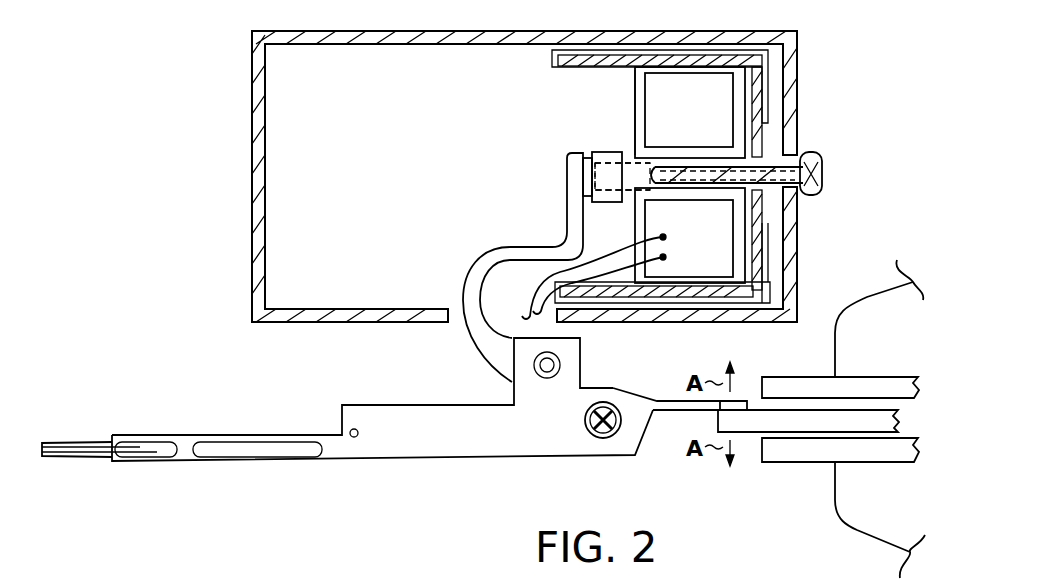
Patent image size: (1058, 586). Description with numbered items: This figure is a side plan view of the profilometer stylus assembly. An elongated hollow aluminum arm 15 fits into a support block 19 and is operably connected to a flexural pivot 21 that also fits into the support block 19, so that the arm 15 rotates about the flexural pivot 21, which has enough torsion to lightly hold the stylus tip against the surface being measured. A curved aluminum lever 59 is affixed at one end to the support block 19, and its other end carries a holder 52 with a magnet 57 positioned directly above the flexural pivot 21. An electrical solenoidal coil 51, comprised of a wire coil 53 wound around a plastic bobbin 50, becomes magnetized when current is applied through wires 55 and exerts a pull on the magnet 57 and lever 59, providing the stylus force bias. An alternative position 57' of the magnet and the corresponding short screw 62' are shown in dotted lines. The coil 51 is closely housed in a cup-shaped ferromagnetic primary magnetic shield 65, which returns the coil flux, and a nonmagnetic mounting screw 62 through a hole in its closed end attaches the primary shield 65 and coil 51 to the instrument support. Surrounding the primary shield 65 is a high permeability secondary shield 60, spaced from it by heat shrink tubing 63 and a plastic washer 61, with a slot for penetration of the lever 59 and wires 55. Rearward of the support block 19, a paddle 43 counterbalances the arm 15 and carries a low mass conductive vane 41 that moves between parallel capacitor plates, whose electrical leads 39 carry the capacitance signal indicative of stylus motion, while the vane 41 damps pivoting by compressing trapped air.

The secondary shield 60 is at (253, 33).
The heat shrink tubing 63 is at (552, 53).
The primary magnetic shield 65 is at (569, 68).
The plastic bobbin 50 is at (635, 83).
The wire coil 53 is at (701, 121).
The electrical solenoidal coil 51 is at (634, 115).
The plastic washer 61 is at (756, 98).
The mounting screw 62 is at (737, 175).
The short screw 62' is at (838, 188).
The alternative position of the magnet 57' is at (589, 158).
The magnet 57 is at (607, 198).
The holder 52 is at (567, 175).
The lever 59 is at (510, 252).
The wires 55 is at (668, 257).
The support block 19 is at (422, 458).
The aluminum arm 15 is at (62, 459).
The flexural pivot 21 is at (590, 433).
The paddle 43 is at (648, 401).
The vane 41 is at (800, 415).
The electrical leads 39 is at (857, 309).